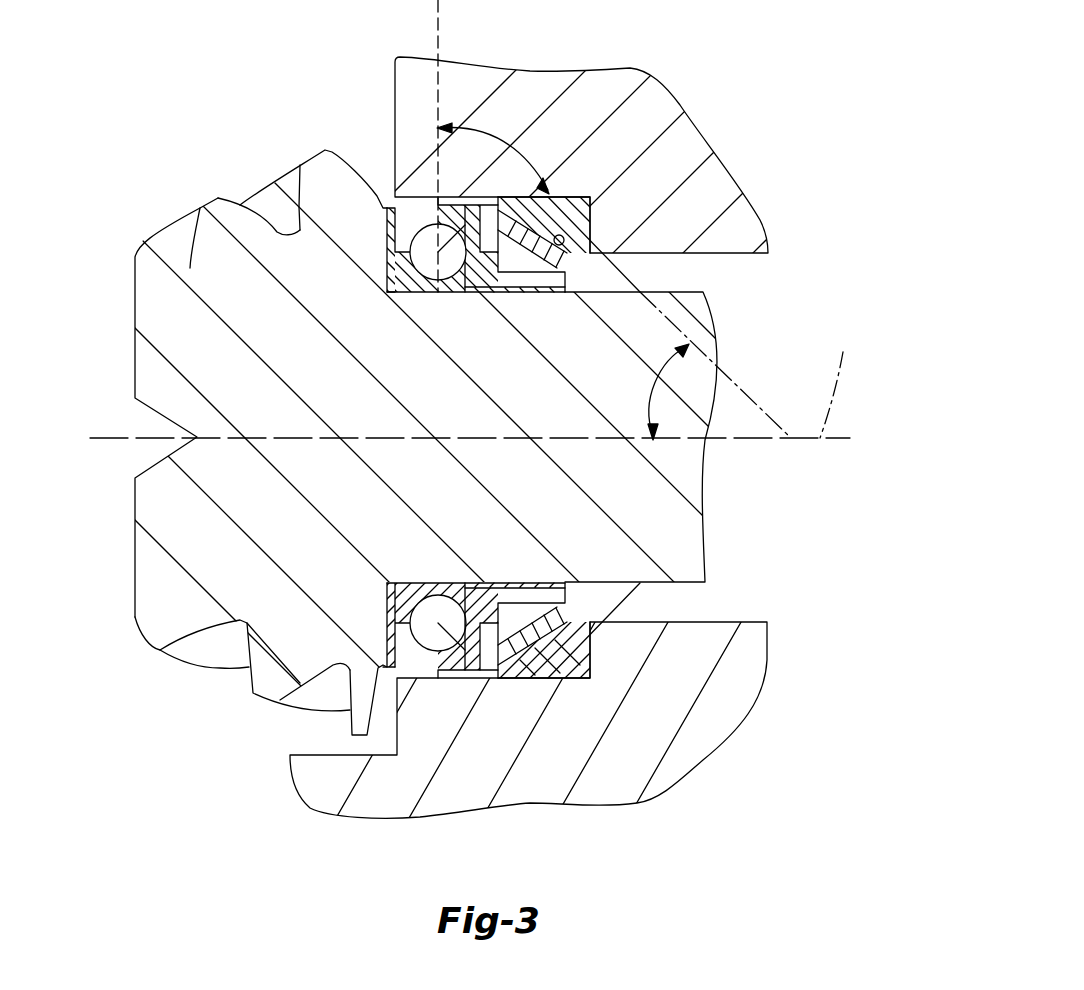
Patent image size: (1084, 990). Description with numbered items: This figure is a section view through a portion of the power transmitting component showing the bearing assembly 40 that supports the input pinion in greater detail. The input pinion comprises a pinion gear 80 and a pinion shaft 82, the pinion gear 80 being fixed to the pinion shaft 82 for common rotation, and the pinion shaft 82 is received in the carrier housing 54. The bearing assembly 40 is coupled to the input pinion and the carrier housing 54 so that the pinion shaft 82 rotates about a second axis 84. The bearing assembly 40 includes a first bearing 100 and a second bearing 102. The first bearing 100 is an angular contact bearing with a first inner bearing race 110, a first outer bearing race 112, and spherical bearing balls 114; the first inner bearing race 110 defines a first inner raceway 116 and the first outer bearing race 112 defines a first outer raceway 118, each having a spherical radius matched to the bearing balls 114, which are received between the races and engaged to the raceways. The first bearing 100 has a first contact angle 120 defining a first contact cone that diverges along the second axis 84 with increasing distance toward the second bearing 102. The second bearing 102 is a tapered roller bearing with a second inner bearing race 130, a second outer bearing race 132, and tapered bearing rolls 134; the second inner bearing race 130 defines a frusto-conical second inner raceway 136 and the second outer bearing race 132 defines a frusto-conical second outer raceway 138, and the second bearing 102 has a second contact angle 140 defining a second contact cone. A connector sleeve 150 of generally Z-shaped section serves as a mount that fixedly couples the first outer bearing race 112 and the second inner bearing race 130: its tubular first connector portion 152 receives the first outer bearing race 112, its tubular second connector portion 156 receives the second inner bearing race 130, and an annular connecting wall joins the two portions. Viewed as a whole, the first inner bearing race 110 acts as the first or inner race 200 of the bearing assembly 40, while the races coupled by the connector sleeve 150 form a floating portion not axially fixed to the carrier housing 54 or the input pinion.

The bearing assembly 40 is at (597, 198).
The carrier housing 54 is at (745, 622).
The pinion gear 80 is at (165, 310).
The pinion shaft 82 is at (690, 328).
The second axis 84 is at (836, 382).
The first bearing 100 is at (386, 172).
The second bearing 102 is at (545, 197).
The first inner bearing race 110 is at (417, 583).
The first outer bearing race 112 is at (450, 657).
The spherical bearing balls 114 is at (428, 262).
The first inner raceway 116 is at (437, 600).
The first outer raceway 118 is at (425, 632).
The first contact angle 120 is at (502, 135).
The second inner bearing race 130 is at (548, 600).
The second outer bearing race 132 is at (573, 662).
The tapered bearing rolls 134 is at (548, 632).
The second inner raceway 136 is at (563, 266).
The second outer raceway 138 is at (564, 244).
The second contact angle 140 is at (658, 392).
The connector sleeve 150 is at (548, 598).
The first connector portion 152 is at (470, 213).
The second connector portion 156 is at (510, 278).
The first race 200 is at (405, 600).